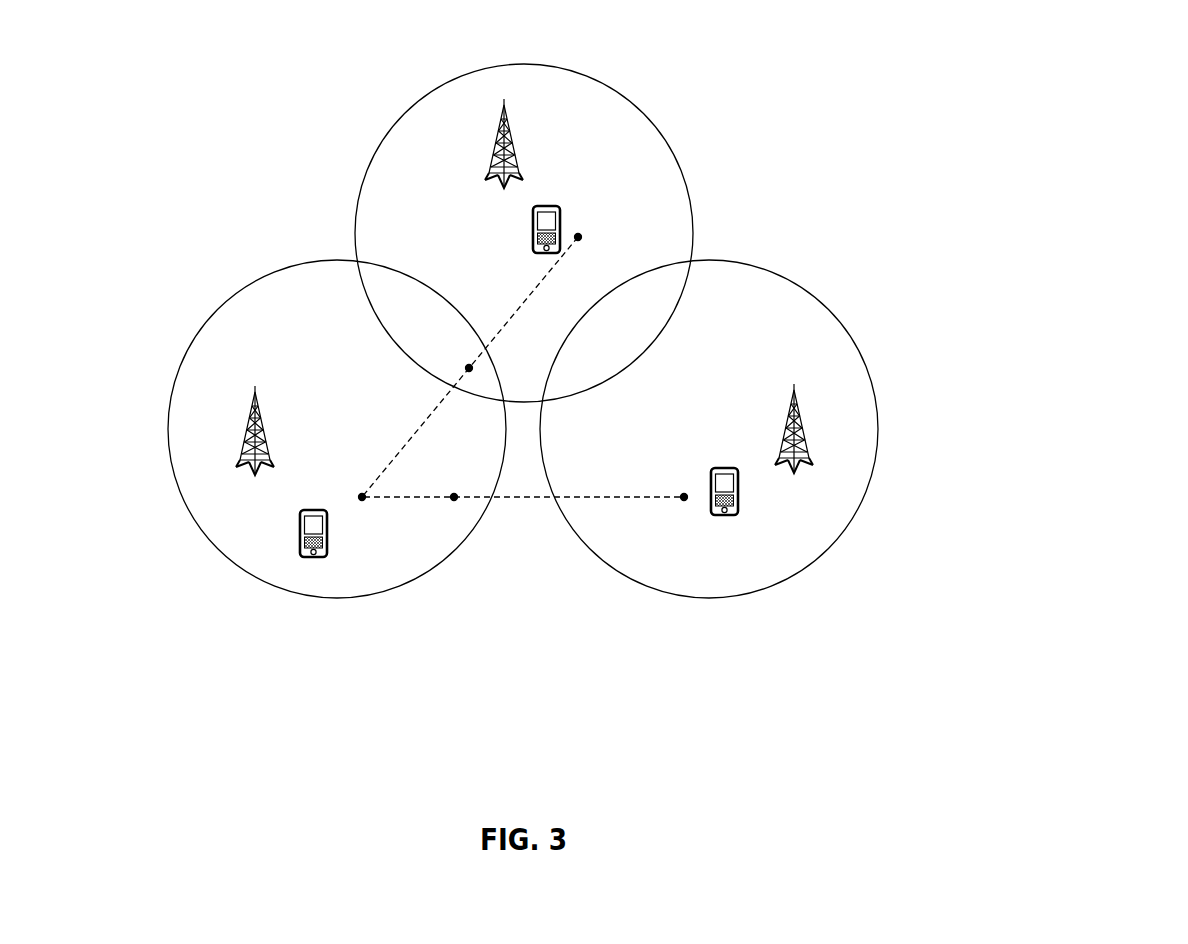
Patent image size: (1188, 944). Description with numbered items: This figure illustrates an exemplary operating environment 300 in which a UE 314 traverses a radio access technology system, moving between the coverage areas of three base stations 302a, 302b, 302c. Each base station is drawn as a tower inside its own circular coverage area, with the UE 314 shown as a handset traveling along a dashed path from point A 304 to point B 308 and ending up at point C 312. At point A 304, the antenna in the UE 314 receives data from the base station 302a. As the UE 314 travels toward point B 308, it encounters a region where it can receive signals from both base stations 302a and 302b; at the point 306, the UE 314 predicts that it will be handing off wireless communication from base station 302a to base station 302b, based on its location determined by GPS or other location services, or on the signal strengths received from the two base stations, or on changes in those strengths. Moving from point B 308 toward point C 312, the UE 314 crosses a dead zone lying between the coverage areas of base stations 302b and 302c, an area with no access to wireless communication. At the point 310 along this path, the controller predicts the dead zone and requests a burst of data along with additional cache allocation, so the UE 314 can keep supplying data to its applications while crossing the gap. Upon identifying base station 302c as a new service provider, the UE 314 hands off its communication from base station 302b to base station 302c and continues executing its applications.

The wireless communication system 300 is at (661, 318).
The base station 302a is at (519, 160).
The base station 302b is at (267, 438).
The base station 302c is at (780, 440).
The point A 304 is at (600, 229).
The point 306 is at (450, 355).
The point B 308 is at (367, 500).
The point 310 is at (459, 512).
The point C 312 is at (704, 499).
The UE 314 is at (533, 216).